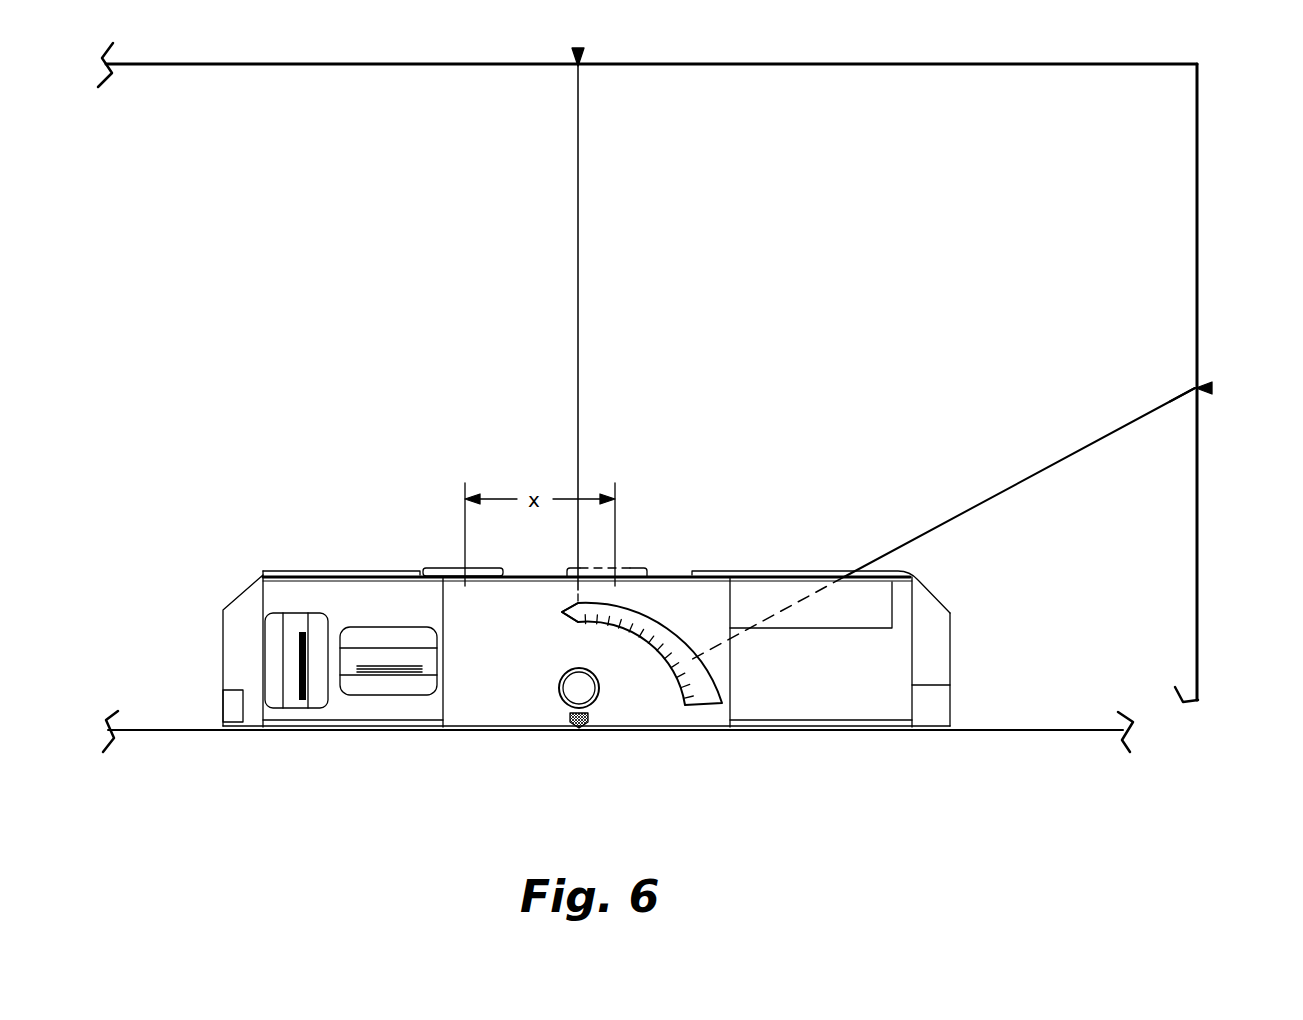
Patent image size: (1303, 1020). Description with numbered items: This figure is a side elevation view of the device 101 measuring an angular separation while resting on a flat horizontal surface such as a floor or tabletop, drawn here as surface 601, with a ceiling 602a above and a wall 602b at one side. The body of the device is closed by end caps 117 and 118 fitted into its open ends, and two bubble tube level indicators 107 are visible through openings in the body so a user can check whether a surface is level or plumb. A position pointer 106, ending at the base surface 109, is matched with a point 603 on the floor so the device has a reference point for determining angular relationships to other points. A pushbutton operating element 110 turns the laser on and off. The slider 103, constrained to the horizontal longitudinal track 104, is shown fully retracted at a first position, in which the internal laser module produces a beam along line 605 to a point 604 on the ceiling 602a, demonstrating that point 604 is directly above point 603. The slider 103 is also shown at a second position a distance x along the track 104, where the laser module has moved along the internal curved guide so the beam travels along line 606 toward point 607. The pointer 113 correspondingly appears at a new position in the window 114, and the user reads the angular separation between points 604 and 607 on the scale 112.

The device 101 is at (327, 468).
The slider 103 is at (442, 565).
The track 104 is at (673, 568).
The position pointer 106 is at (588, 718).
The bubble tube level indicators 107 is at (403, 648).
The base surface 109 is at (452, 730).
The pushbutton operating element 110 is at (559, 690).
The scale 112 is at (658, 625).
The pointer 113 is at (577, 622).
The window 114 is at (640, 645).
The end cap 117 is at (222, 625).
The end cap 118 is at (950, 623).
The floor surface 601 is at (1013, 730).
The ceiling 602a is at (390, 63).
The wall 602b is at (1197, 183).
The point 603 is at (580, 732).
The point 604 is at (578, 50).
The line 605 is at (578, 283).
The line 606 is at (1010, 488).
The point 607 is at (1212, 388).